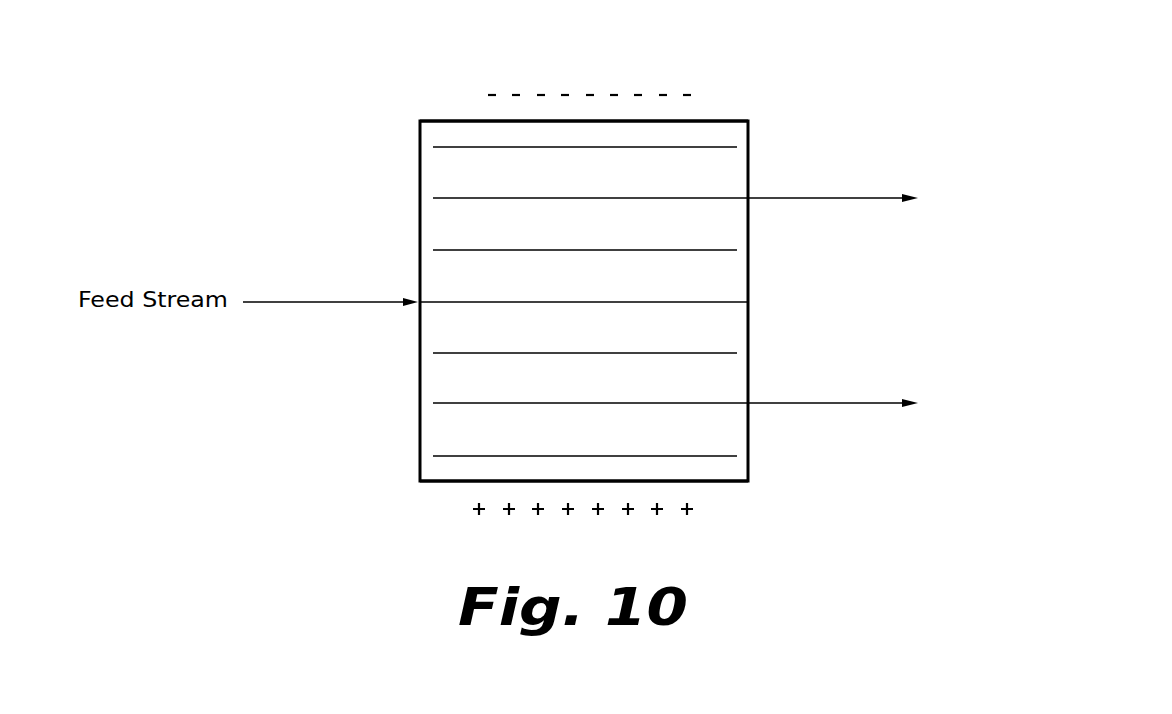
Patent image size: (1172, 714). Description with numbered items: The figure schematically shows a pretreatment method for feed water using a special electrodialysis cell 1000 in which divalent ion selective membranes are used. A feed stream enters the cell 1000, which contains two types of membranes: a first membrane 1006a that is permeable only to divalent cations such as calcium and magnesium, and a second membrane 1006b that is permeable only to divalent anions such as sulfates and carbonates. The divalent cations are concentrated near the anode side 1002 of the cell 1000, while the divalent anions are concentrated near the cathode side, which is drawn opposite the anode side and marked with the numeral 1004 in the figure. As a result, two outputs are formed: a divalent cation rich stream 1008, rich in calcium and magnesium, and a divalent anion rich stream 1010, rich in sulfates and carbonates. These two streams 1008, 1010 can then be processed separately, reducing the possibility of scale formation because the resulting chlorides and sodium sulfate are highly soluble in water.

The electrodialysis cell 1000 is at (342, 367).
The anode side 1002 is at (440, 120).
The positive electrode (anode) 1004 is at (438, 482).
The first membrane 1006a is at (703, 251).
The second membrane 1006b is at (698, 353).
The divalent cation rich stream 1008 is at (872, 203).
The divalent anion rich stream 1010 is at (804, 404).